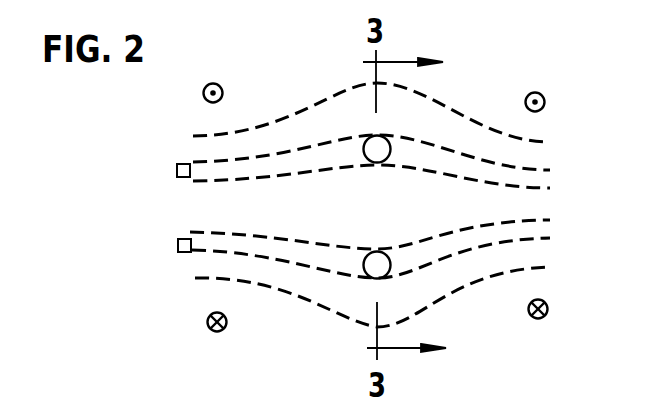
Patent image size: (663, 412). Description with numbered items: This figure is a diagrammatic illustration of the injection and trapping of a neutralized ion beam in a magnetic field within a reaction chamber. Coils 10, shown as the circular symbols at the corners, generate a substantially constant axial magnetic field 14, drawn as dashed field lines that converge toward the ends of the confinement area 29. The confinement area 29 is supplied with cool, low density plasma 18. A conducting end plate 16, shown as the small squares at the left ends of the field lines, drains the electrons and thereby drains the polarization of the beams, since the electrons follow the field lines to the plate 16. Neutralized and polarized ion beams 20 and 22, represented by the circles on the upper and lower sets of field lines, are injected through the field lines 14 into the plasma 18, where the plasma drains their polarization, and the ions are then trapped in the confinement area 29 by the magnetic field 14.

The coils 10 is at (207, 317).
The axial magnetic field 14 is at (423, 316).
The conducting end plate 16 is at (177, 170).
The plasma 18 is at (380, 205).
The neutralized and polarized ion beam 20 is at (365, 155).
The neutralized and polarized ion beam 22 is at (363, 272).
The confinement area 29 is at (364, 128).